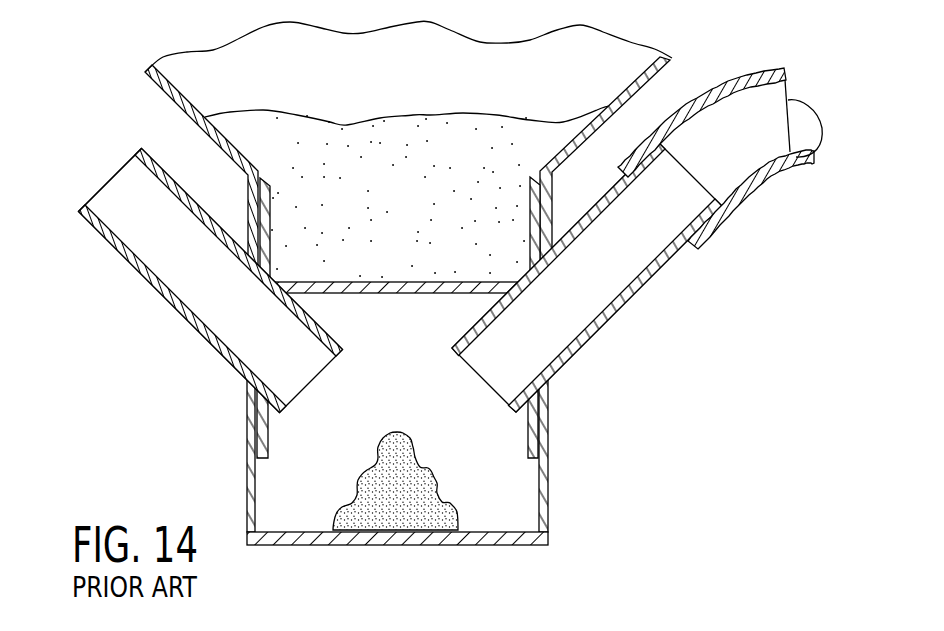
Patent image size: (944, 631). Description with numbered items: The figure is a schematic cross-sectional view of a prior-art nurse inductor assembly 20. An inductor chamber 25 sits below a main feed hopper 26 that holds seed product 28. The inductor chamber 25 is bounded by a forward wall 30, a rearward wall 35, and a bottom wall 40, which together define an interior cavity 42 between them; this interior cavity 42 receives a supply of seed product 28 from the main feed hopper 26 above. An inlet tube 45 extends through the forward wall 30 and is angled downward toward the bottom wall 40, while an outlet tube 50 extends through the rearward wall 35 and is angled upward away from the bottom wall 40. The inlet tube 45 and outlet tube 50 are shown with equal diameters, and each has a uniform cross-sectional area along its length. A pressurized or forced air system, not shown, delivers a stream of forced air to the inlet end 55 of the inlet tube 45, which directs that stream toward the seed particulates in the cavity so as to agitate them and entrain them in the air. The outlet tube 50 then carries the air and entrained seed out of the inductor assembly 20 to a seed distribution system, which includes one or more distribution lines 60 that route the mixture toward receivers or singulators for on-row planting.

The nurse inductor assembly 20 is at (731, 132).
The inductor chamber 25 is at (411, 482).
The main feed hopper 26 is at (170, 100).
The seed product 28 is at (418, 200).
The forward wall 30 is at (247, 460).
The rearward wall 35 is at (550, 503).
The bottom wall 40 is at (400, 545).
The interior cavity 42 is at (497, 449).
The inlet tube 45 is at (183, 280).
The outlet tube 50 is at (620, 308).
The inlet end 55 is at (100, 190).
The distribution line 60 is at (783, 172).